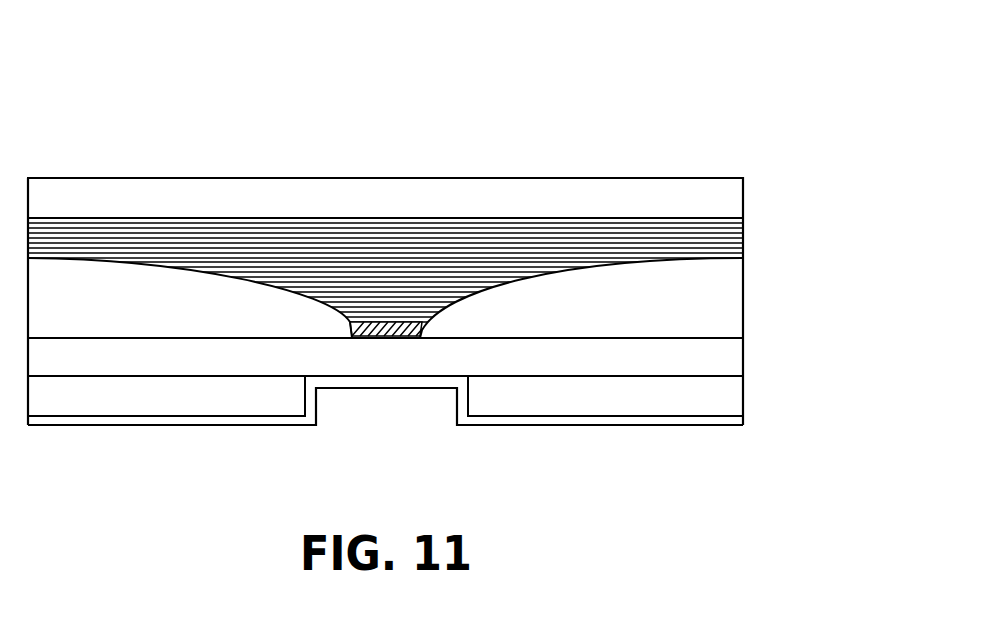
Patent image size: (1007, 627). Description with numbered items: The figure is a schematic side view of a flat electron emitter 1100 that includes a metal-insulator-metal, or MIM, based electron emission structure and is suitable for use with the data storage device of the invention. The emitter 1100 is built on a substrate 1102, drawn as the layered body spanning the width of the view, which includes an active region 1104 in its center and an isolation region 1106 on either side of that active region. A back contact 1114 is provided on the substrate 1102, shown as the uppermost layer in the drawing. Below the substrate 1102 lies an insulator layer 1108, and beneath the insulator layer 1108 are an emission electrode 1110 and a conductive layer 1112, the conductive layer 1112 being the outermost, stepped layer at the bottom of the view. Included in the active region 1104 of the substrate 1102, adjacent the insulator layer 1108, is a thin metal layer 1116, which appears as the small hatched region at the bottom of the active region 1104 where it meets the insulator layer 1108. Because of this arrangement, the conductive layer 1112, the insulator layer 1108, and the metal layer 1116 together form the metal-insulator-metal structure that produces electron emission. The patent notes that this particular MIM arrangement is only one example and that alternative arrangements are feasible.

The flat electron emitter 1100 is at (773, 100).
The substrate 1102 is at (743, 287).
The active region 1104 is at (413, 282).
The isolation region 1106 is at (175, 316).
The insulator layer 1108 is at (743, 343).
The emission electrode 1110 is at (743, 403).
The conductive layer 1112 is at (665, 418).
The back contact 1114 is at (743, 193).
The thin metal layer 1116 is at (424, 330).